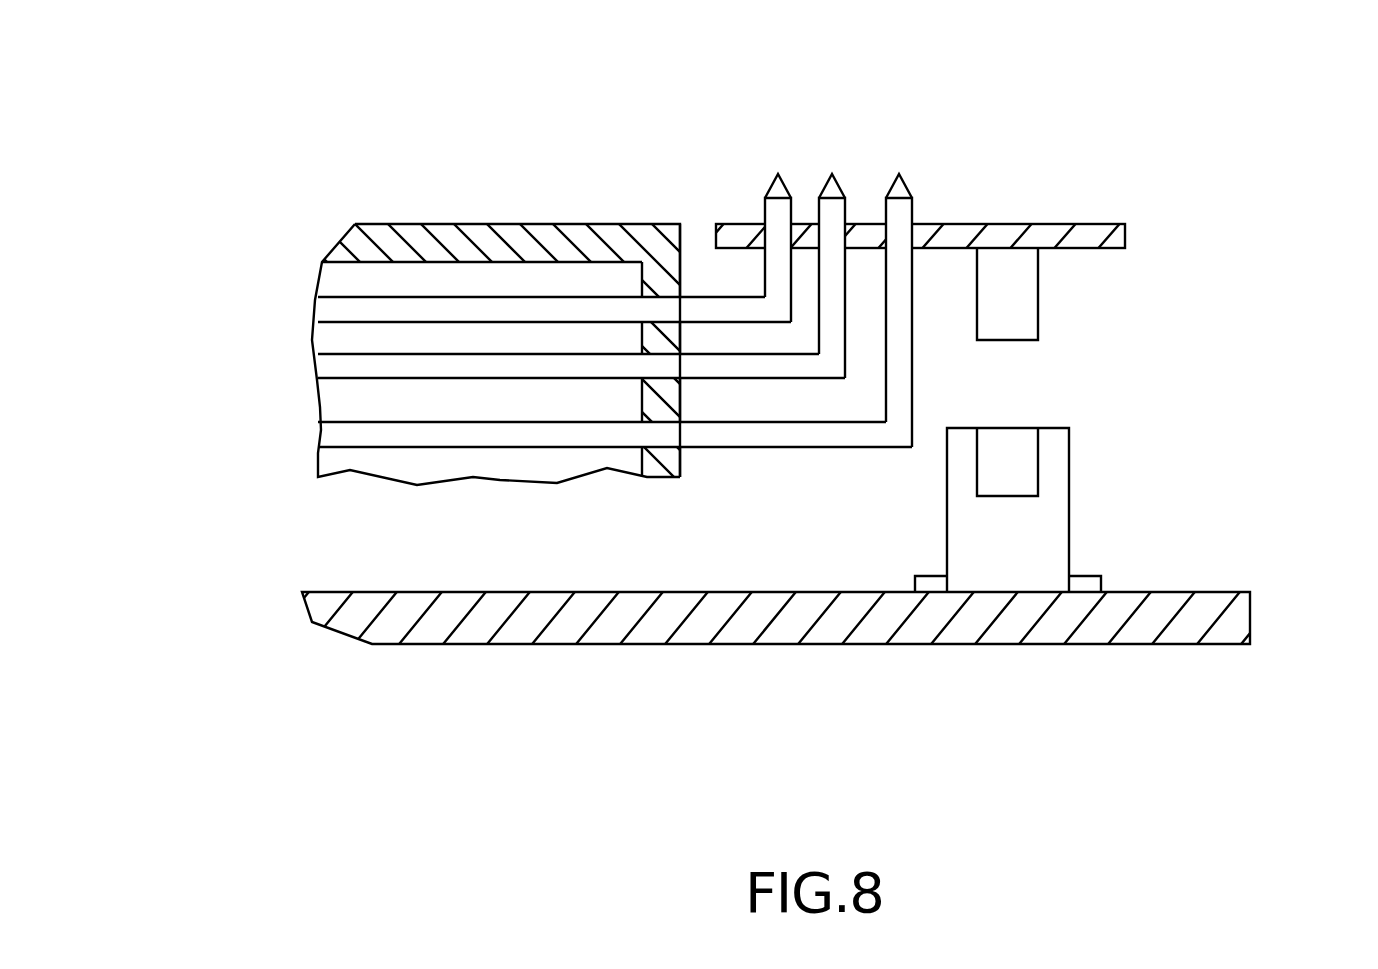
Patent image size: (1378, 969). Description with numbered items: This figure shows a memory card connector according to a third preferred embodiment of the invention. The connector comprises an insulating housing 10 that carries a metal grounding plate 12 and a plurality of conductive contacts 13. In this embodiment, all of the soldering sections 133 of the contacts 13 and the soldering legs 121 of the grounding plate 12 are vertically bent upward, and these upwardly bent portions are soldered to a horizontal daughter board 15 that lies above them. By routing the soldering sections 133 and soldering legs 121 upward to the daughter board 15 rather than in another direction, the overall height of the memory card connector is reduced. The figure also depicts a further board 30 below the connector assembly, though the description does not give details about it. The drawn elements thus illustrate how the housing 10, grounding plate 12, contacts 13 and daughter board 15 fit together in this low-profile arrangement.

The insulating housing 10 is at (505, 233).
The metal grounding plate 12 is at (700, 287).
The soldering legs 121 is at (787, 267).
The soldering sections 133 is at (830, 287).
The daughter board 15 is at (1055, 235).
The mating circuit board 30 is at (420, 620).
The conductive contacts 13 is at (742, 420).